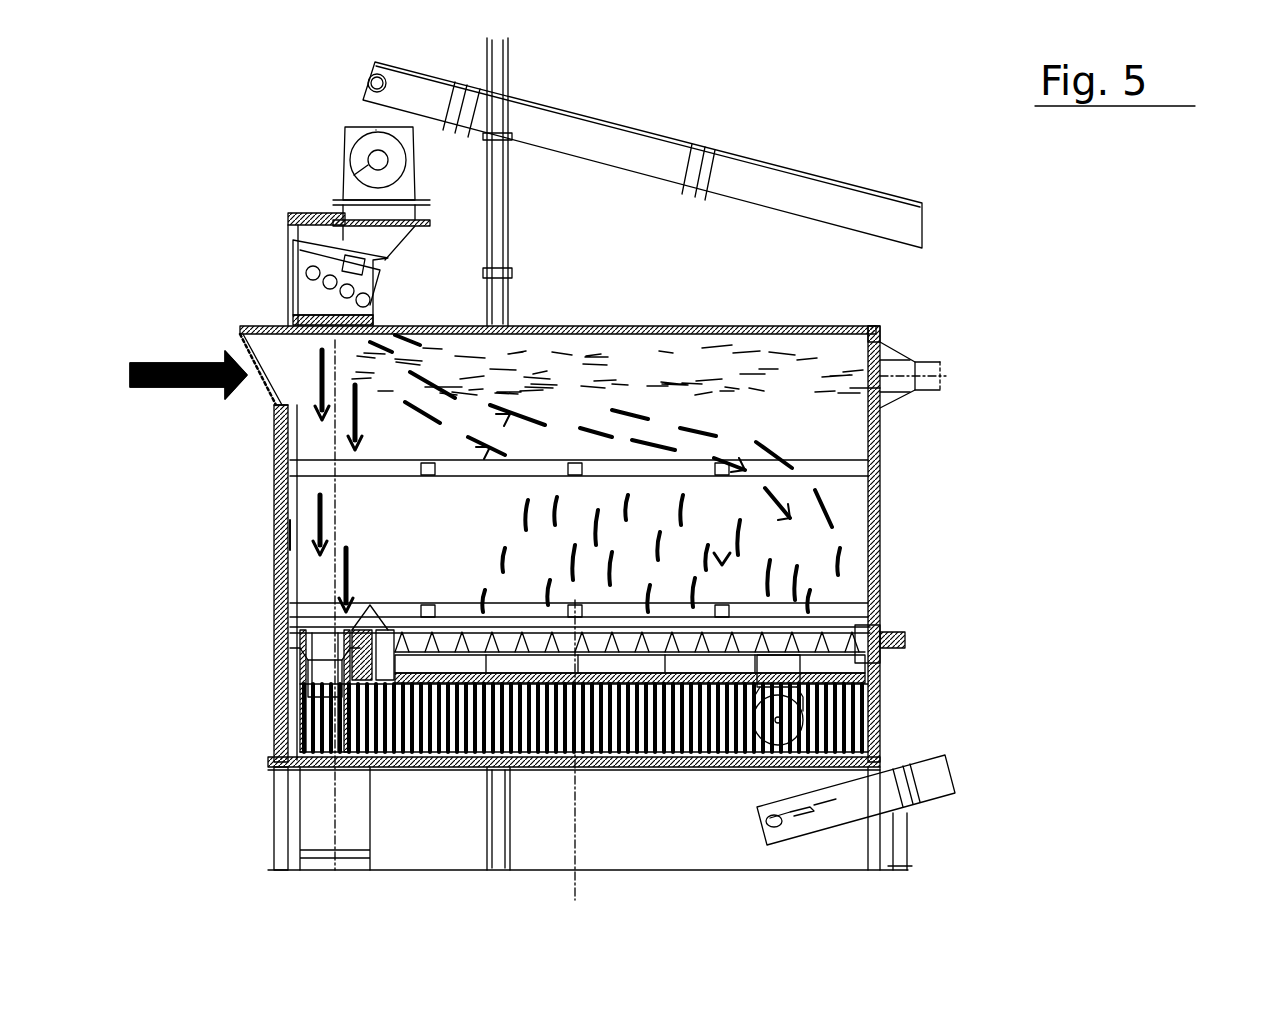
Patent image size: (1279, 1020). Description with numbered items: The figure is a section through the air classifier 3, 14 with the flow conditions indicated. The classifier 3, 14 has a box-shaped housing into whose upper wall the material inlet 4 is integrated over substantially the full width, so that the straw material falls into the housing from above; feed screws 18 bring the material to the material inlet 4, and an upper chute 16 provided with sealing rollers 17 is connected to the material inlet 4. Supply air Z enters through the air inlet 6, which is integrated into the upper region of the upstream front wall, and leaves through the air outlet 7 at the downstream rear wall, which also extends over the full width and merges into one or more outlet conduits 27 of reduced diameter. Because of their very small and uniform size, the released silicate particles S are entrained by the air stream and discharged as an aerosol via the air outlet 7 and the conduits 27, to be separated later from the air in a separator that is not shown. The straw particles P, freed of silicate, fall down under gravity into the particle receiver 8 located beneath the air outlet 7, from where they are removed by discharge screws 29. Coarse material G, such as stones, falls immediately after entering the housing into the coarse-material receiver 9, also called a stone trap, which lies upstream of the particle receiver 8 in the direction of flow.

The classifier 3 is at (1060, 435).
The classifier 14 is at (1080, 410).
The material inlet 4 is at (310, 200).
The air inlet 6 is at (270, 398).
The air outlet 7 is at (895, 348).
The particle receiver 8 is at (838, 606).
The coarse-material receiver 9 is at (275, 658).
The upper chute 16 is at (295, 269).
The sealing rollers 17 is at (318, 297).
The feed screws 18 is at (372, 153).
The outlet conduits 27 is at (940, 372).
The discharge screws 29 is at (830, 643).
The supply air Z is at (159, 373).
The silicate particles S is at (677, 360).
The straw particles P is at (835, 517).
The coarse material G is at (318, 512).